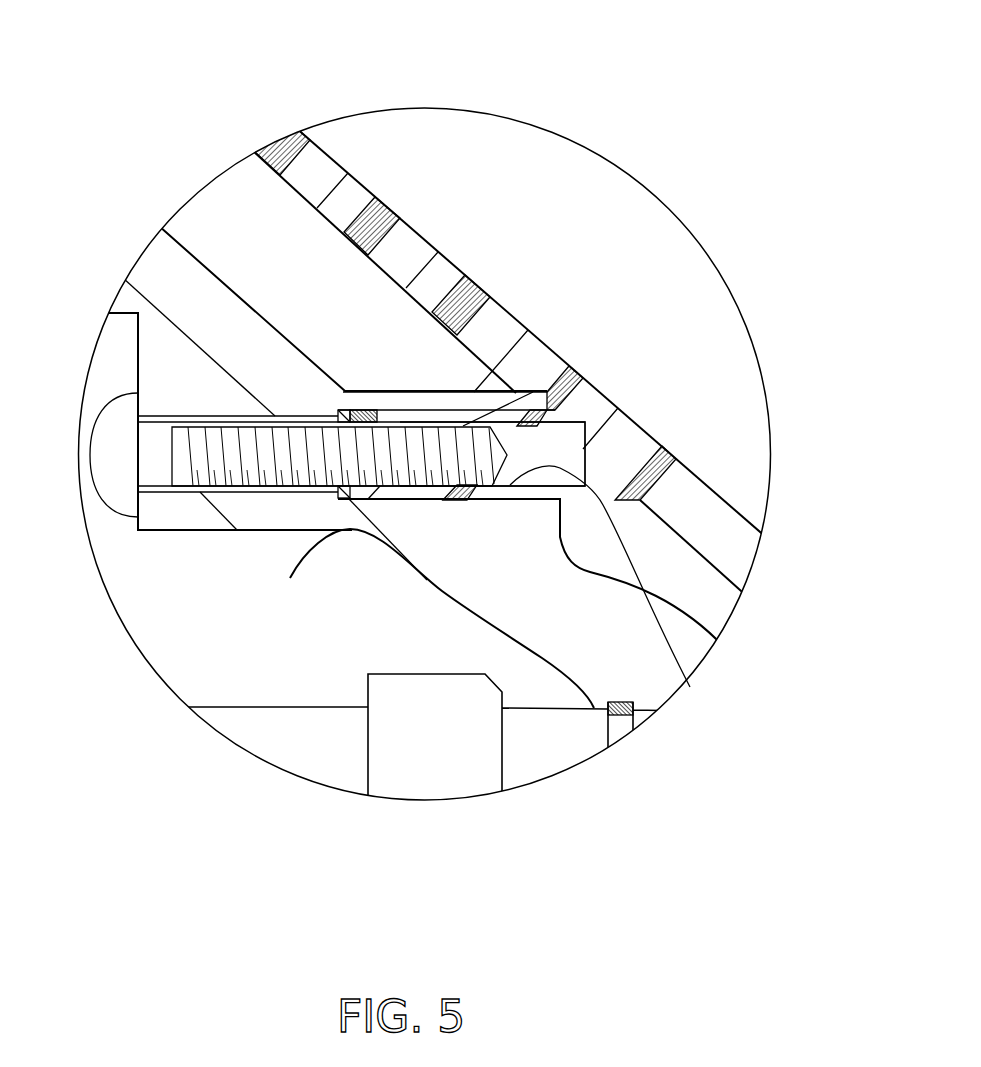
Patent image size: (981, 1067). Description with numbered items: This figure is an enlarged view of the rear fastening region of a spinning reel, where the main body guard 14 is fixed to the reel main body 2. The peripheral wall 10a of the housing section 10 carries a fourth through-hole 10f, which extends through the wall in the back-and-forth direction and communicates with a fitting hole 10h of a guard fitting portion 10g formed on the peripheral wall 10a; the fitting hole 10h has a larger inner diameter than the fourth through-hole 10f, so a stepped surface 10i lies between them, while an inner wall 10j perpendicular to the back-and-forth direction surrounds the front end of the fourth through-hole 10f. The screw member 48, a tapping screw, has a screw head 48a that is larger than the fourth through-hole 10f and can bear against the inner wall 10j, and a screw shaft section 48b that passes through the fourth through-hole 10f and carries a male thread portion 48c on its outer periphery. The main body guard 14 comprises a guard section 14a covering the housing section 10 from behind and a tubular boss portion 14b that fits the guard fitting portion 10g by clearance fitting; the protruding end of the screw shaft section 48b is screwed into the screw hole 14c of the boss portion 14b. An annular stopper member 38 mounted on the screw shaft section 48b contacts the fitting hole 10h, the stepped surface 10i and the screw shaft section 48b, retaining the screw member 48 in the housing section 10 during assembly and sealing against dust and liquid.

The reel main body 2 is at (298, 340).
The housing section 10 is at (218, 252).
The peripheral wall 10a is at (530, 612).
The fourth through-hole 10f is at (245, 487).
The guard fitting portion 10g is at (350, 392).
The fitting hole 10h is at (443, 425).
The stepped surface 10i is at (429, 618).
The inner wall 10j is at (138, 373).
The main body guard 14 is at (467, 225).
The guard section 14a is at (354, 205).
The boss portion 14b is at (470, 505).
The screw hole 14c is at (690, 687).
The stopper member 38 is at (447, 382).
The screw member 48 is at (280, 413).
The screw head 48a is at (118, 460).
The screw shaft section 48b is at (293, 495).
The male thread portion 48c is at (387, 499).